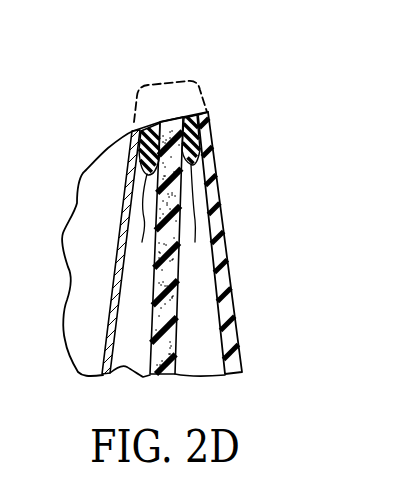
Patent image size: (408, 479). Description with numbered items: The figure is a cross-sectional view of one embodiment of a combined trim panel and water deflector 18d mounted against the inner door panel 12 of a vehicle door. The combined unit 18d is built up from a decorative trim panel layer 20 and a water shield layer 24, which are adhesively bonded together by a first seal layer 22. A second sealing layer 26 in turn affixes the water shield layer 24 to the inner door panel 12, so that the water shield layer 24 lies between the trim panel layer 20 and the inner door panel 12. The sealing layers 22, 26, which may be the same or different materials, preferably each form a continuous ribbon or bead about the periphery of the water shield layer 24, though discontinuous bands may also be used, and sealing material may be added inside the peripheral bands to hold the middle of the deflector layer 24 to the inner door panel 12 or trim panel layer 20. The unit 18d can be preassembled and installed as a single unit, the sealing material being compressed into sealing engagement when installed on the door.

The inner door panel 12 is at (127, 207).
The combined trim panel and water deflector 18d is at (170, 111).
The decorative trim panel layer 20 is at (233, 317).
The first seal layer 22 is at (197, 219).
The water shield layer 24 is at (151, 331).
The second sealing layer 26 is at (137, 223).